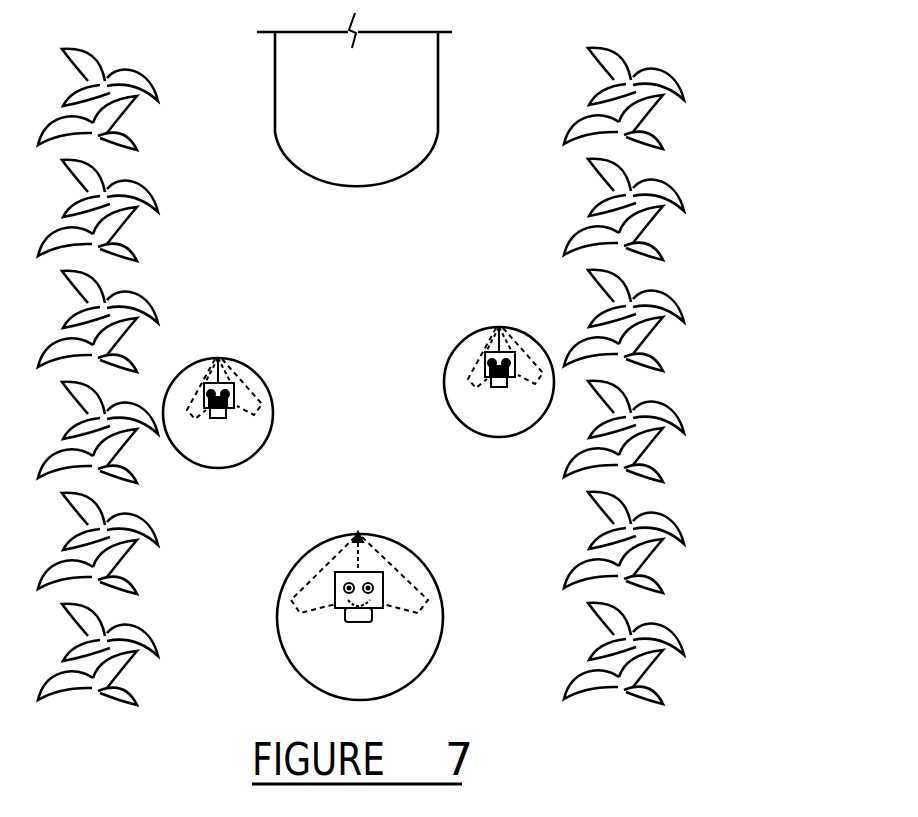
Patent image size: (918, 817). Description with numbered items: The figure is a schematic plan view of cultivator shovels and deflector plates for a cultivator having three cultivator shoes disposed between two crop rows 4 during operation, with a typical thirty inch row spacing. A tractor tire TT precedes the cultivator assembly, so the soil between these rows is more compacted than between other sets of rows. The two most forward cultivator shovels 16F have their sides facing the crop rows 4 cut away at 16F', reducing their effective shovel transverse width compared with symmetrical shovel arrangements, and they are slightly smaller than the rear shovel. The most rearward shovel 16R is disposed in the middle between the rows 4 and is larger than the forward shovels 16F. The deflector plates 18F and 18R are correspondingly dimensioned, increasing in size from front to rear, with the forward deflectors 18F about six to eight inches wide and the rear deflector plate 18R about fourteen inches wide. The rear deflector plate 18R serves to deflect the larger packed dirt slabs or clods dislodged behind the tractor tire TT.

The tractor tire TT is at (441, 77).
The crop rows 4 is at (138, 494).
The forward cultivator shovel 16F is at (359, 332).
The cut-away 16F' is at (498, 346).
The deflector plate 18F is at (274, 418).
The rear cultivator shovel 16R is at (406, 582).
The deflector plate 18R is at (444, 605).